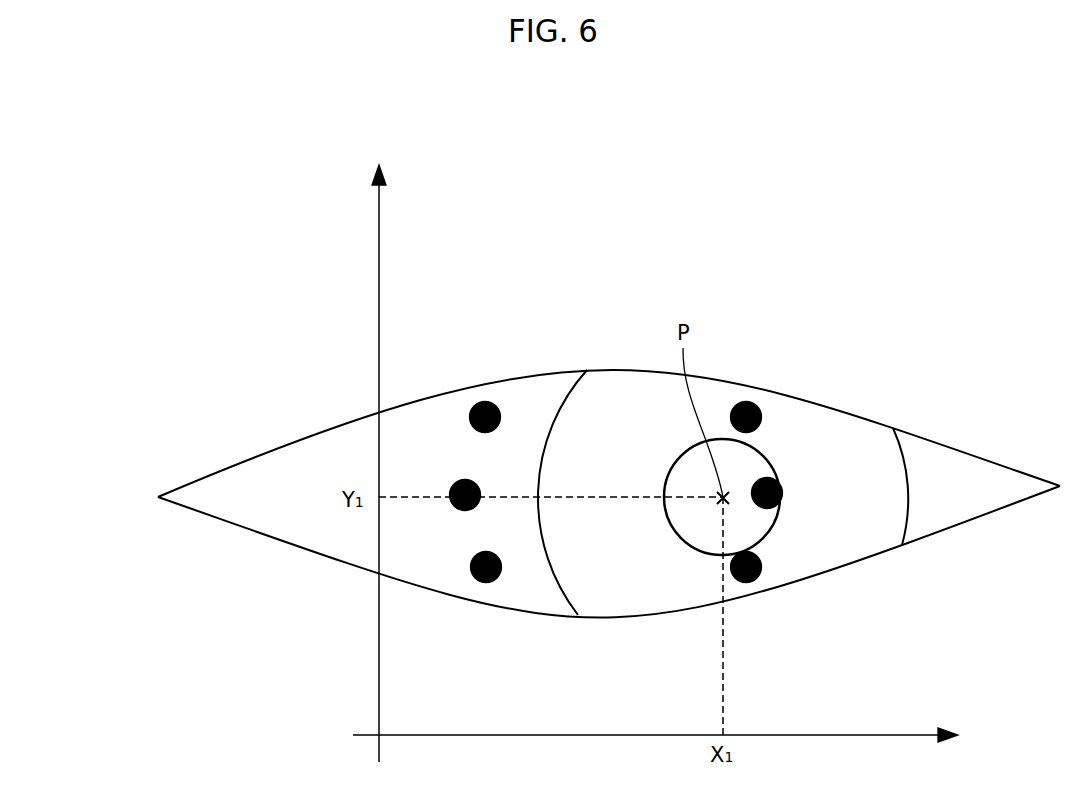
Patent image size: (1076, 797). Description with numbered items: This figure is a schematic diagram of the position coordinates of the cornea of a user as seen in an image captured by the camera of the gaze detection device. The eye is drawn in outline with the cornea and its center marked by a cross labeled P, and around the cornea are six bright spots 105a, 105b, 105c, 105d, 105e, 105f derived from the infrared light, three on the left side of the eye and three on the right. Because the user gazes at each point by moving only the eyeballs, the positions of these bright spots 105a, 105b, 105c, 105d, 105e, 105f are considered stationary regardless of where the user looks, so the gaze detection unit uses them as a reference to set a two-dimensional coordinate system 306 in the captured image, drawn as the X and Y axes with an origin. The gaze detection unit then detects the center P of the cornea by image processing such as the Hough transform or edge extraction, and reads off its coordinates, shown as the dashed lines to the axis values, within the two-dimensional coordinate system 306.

The two-dimensional coordinate system 306 is at (379, 265).
The bright spot 105a is at (480, 402).
The bright spot 105b is at (480, 492).
The bright spot 105c is at (488, 582).
The bright spot 105d is at (750, 402).
The bright spot 105e is at (783, 488).
The bright spot 105f is at (750, 587).